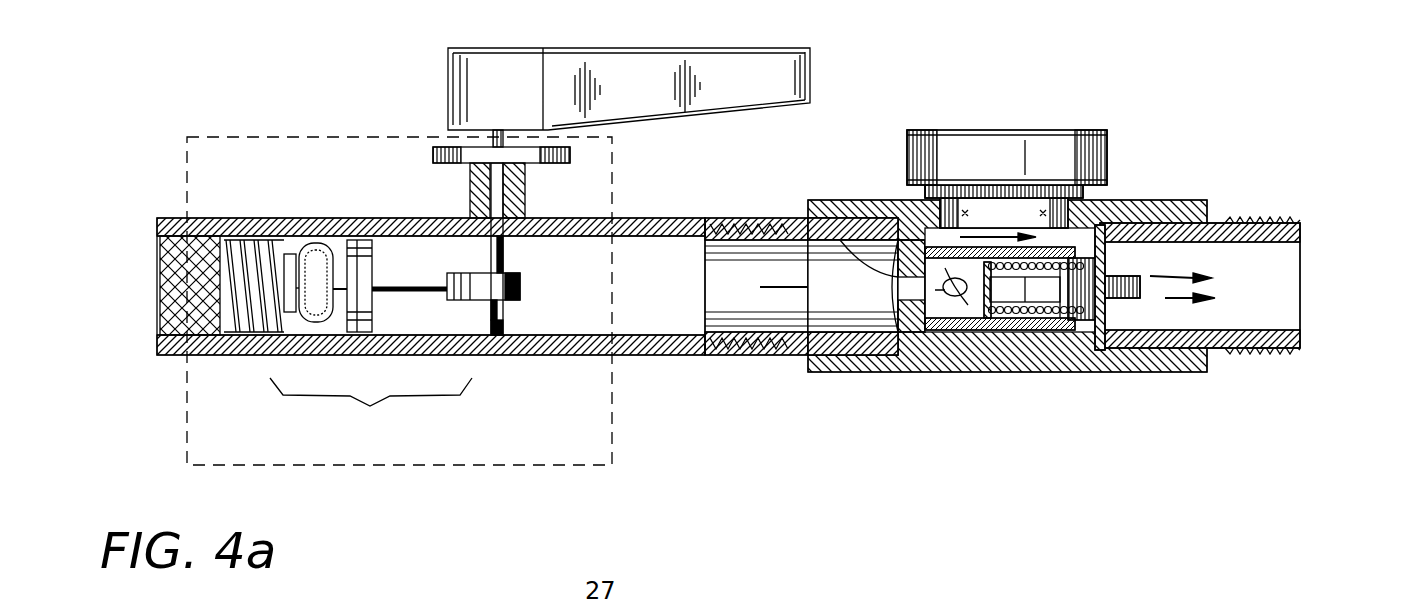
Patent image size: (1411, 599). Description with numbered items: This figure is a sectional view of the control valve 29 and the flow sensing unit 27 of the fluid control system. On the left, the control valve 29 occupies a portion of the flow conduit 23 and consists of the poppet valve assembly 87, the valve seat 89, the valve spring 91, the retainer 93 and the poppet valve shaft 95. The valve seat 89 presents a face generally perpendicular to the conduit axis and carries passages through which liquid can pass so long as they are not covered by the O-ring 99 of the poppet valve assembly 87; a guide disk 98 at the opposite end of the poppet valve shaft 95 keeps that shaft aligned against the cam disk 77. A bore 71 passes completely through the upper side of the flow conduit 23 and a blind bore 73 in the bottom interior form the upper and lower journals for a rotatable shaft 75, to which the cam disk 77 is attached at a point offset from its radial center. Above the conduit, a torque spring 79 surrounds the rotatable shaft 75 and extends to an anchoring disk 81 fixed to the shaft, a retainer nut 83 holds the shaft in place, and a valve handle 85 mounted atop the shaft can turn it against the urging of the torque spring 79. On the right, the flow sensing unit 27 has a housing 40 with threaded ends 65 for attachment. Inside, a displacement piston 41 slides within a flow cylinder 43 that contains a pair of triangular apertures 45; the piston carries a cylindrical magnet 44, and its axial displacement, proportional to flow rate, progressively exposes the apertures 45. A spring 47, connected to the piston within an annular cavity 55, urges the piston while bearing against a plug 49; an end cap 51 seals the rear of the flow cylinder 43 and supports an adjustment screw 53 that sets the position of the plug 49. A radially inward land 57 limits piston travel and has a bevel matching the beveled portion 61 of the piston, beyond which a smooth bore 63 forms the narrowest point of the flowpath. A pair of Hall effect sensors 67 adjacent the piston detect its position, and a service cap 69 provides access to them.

The flow conduit 23 is at (660, 218).
The flow sensing unit 27 is at (1172, 385).
The control valve 29 is at (452, 470).
The flow sensing unit housing 40 is at (1210, 210).
The displacement piston 41 is at (960, 372).
The flow cylinder 43 is at (1060, 372).
The magnet 44 is at (1040, 372).
The apertures 45 is at (950, 355).
The spring 47 is at (1060, 258).
The plug 49 is at (1085, 372).
The end cap 51 is at (1100, 270).
The adjustment screw 53 is at (1215, 282).
The annular cavity 55 is at (990, 372).
The land 57 is at (895, 320).
The beveled portion 61 is at (905, 240).
The smooth bore 63 is at (895, 262).
The threaded ends 65 is at (730, 356).
The Hall effect sensors 67 is at (960, 215).
The service cap 69 is at (1005, 130).
The bore 71 is at (505, 240).
The blind bore 73 is at (505, 326).
The rotatable shaft 75 is at (510, 310).
The cam disk 77 is at (520, 285).
The torque spring 79 is at (525, 183).
The anchoring disk 81 is at (570, 155).
The retainer nut 83 is at (470, 190).
The valve handle 85 is at (810, 60).
The poppet valve assembly 87 is at (371, 409).
The valve seat 89 is at (362, 236).
The valve spring 91 is at (266, 236).
The retainer 93 is at (158, 272).
The poppet valve shaft 95 is at (417, 288).
The guide disk 98 is at (285, 236).
The O-ring 99 is at (322, 243).